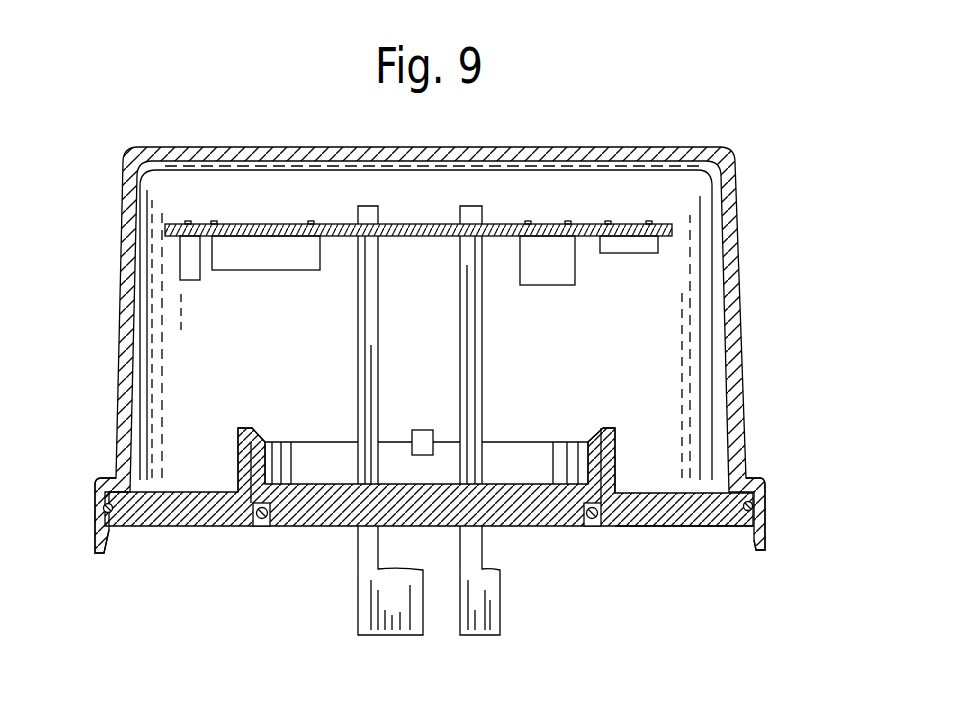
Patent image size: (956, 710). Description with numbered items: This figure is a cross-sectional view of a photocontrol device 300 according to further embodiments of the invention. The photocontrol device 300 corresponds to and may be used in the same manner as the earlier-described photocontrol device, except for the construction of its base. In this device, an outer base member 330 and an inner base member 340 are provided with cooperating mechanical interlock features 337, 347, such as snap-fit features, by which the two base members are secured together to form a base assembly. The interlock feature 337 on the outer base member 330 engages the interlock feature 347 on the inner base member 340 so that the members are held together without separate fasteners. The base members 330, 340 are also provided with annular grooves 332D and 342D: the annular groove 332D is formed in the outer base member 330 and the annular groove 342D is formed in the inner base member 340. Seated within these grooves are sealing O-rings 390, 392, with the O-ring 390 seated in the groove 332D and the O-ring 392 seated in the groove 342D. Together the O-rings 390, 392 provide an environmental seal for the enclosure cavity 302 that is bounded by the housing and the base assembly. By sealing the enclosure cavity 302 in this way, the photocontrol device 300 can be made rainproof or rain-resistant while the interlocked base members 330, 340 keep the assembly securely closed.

The photocontrol device 300 is at (693, 118).
The enclosure cavity 302 is at (657, 290).
The inner base member 340 is at (343, 518).
The mechanical interlock feature 347 is at (587, 448).
The annular groove 342D is at (292, 478).
The mechanical interlock feature 337 is at (618, 462).
The sealing O-ring 392 is at (243, 490).
The sealing O-ring 390 is at (104, 510).
The annular groove 332D is at (123, 528).
The outer base member 330 is at (647, 523).